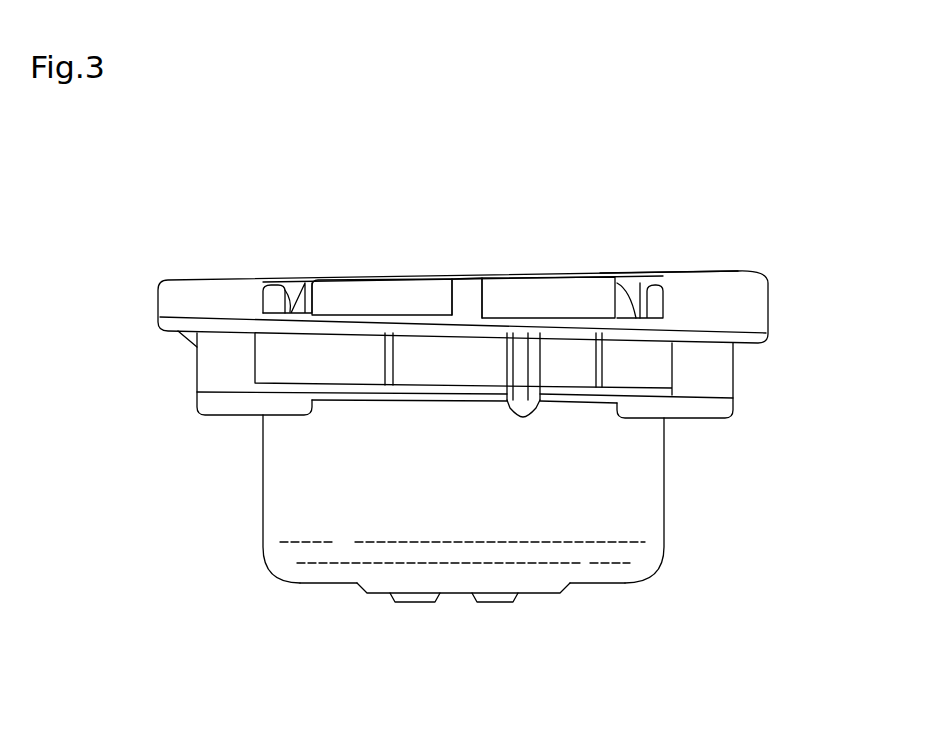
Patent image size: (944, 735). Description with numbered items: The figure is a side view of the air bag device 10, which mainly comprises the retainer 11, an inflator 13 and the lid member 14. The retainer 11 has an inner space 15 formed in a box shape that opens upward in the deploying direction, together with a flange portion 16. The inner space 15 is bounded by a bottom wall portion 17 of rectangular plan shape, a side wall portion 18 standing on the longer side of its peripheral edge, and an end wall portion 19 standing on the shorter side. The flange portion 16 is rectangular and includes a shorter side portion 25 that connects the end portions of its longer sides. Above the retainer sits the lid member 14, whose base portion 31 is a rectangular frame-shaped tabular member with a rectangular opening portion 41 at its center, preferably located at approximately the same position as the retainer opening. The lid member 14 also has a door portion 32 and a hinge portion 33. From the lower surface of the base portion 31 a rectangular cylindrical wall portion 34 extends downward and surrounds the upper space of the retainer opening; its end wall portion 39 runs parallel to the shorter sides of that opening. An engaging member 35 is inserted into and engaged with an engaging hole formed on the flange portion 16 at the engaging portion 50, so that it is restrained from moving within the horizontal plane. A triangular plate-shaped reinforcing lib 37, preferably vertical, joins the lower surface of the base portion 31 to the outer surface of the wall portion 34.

The air bag device 10 is at (772, 234).
The retainer 11 is at (672, 510).
The inflator 13 is at (528, 603).
The lid member 14 is at (660, 262).
The inner space 15 is at (615, 583).
The flange portion 16 is at (455, 501).
The bottom wall portion 17 is at (592, 583).
The side wall portion 18 is at (262, 488).
The end wall portion 19 is at (316, 513).
The shorter side portion 25 is at (422, 398).
The base portion 31 is at (771, 303).
The door portion 32 is at (408, 290).
The hinge portion 33 is at (295, 277).
The wall portion 34 is at (463, 522).
The engaging member 35 is at (522, 418).
The reinforcing lib 37 is at (604, 370).
The end wall portion 39 is at (362, 360).
The opening portion 41 is at (465, 292).
The engaging portion 50 is at (552, 412).